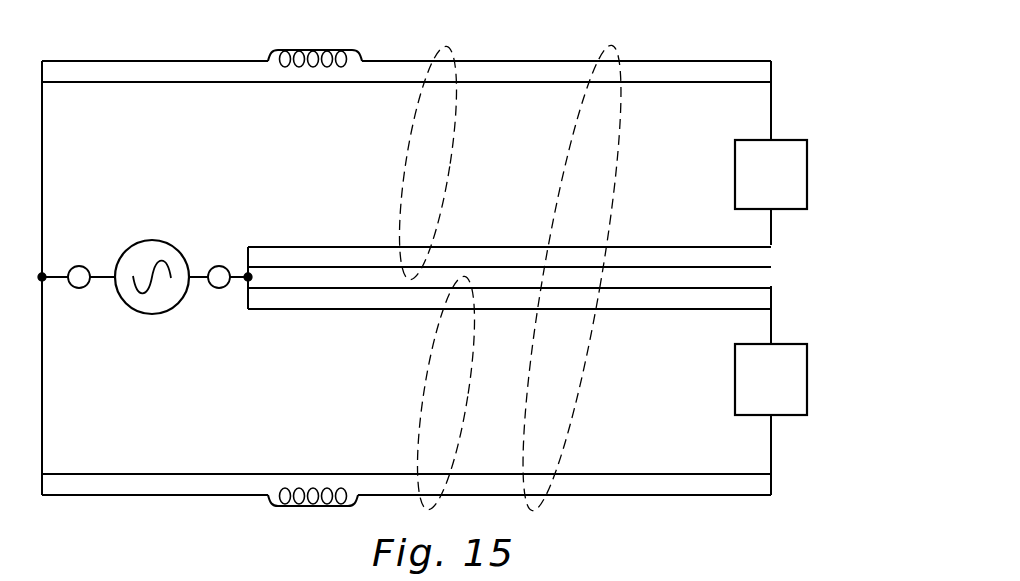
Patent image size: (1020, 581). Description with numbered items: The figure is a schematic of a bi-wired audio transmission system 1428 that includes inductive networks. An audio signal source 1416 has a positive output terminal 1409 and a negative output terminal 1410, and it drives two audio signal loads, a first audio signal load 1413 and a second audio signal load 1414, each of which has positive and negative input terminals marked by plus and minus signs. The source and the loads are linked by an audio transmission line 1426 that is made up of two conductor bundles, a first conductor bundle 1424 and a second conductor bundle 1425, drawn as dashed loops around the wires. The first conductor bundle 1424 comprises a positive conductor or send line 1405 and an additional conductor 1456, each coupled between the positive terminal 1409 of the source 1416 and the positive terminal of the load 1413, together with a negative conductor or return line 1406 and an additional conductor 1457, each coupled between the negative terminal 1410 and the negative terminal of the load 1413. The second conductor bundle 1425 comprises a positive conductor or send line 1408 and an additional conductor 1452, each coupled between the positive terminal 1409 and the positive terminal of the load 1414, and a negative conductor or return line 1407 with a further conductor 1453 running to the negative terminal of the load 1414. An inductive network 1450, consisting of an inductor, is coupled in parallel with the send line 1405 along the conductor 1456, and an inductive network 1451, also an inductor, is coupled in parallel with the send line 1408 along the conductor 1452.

The positive conductor or send line 1405 is at (643, 82).
The negative conductor or return line 1406 is at (760, 266).
The negative conductor or return line 1407 is at (755, 287).
The positive conductor or send line 1408 is at (660, 474).
The positive output terminal 1409 is at (79, 266).
The negative output terminal 1410 is at (219, 266).
The audio signal load 1413 is at (785, 210).
The audio signal load 1414 is at (785, 416).
The audio signal source 1416 is at (152, 314).
The conductor bundle 1424 is at (413, 118).
The conductor bundle 1425 is at (428, 362).
The audio transmission line 1426 is at (578, 126).
The bi-wired audio transmission system 1428 is at (783, 112).
The inductive network 1450 is at (318, 48).
The inductive network 1451 is at (304, 508).
The additional conductor 1452 is at (625, 495).
The conductor of transmission line 1453 is at (625, 309).
The additional conductor 1456 is at (720, 60).
The additional conductor 1457 is at (527, 247).